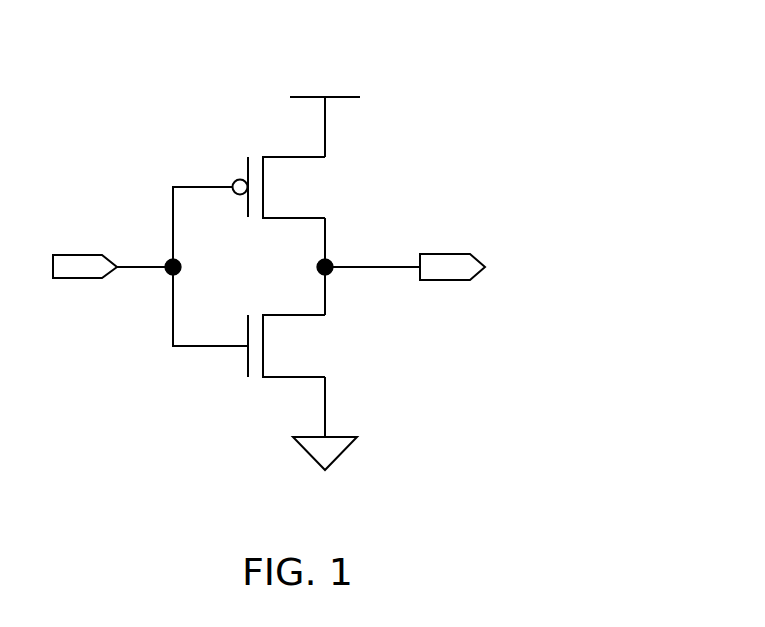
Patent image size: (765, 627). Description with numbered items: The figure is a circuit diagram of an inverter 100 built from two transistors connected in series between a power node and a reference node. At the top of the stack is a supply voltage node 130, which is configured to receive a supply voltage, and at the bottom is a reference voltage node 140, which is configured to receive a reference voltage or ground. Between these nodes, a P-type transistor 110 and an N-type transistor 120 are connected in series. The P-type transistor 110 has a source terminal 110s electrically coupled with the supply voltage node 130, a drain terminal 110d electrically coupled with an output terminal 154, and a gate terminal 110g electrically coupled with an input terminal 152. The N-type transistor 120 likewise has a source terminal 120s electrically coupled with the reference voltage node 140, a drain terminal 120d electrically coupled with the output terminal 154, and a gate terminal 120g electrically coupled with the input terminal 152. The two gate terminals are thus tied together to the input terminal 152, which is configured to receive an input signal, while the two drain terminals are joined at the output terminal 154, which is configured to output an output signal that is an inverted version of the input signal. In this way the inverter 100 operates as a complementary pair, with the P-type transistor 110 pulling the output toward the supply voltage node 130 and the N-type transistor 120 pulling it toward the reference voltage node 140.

The inverter 100 is at (546, 70).
The P-type transistor 110 is at (307, 188).
The source terminal 110s is at (325, 135).
The gate terminal 110g is at (222, 187).
The drain terminal 110d is at (328, 262).
The N-type transistor 120 is at (307, 348).
The source terminal 120s is at (325, 408).
The gate terminal 120g is at (202, 346).
The drain terminal 120d is at (328, 272).
The supply voltage node 130 is at (336, 97).
The reference voltage node 140 is at (342, 455).
The input terminal 152 is at (77, 255).
The output terminal 154 is at (485, 267).